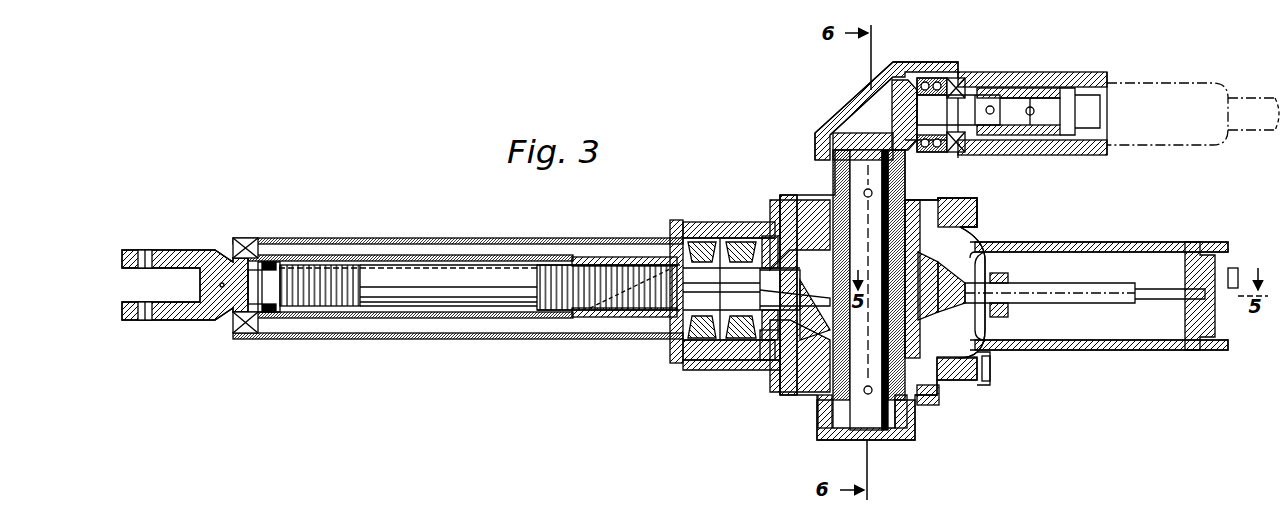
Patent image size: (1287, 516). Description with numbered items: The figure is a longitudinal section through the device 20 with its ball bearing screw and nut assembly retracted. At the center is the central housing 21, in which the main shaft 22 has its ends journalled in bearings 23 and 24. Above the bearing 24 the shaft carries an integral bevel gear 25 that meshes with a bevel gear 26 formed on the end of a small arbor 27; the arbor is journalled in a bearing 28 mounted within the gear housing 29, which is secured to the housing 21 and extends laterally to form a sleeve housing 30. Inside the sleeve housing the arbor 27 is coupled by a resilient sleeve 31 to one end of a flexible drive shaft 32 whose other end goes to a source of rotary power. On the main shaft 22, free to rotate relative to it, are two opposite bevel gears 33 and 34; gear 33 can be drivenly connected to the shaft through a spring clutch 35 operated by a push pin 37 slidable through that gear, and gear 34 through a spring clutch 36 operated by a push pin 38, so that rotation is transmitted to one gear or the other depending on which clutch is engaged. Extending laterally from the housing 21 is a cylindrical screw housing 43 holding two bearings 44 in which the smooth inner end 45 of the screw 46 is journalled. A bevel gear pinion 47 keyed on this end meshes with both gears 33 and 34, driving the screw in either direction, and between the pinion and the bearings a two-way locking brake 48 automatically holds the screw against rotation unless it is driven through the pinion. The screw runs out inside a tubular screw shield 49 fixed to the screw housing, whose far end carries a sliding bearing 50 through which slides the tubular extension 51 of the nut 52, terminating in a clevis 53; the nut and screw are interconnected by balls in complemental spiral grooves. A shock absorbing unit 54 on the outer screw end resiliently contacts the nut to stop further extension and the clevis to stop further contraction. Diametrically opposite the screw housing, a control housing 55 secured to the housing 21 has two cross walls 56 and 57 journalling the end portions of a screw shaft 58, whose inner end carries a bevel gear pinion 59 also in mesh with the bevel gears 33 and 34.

The device 20 is at (716, 365).
The central housing 21 is at (975, 208).
The main shaft 22 is at (932, 395).
The bearing 23 is at (828, 440).
The bearing 24 is at (835, 165).
The bevel gear 25 is at (855, 135).
The bevel gear 26 is at (895, 112).
The arbor 27 is at (950, 110).
The bearing 28 is at (942, 78).
The gear housing 29 is at (825, 132).
The sleeve housing 30 is at (1098, 72).
The resilient sleeve 31 is at (1040, 90).
The flexible drive shaft 32 is at (1215, 90).
The bevel gear 33 is at (945, 258).
The bevel gear 34 is at (958, 378).
The spring clutch 35 is at (836, 190).
The spring clutch 36 is at (830, 400).
The push pin 37 is at (768, 236).
The push pin 38 is at (826, 345).
The screw housing 43 is at (700, 222).
The bearings 44 is at (712, 240).
The smooth inner end 45 is at (748, 300).
The screw 46 is at (395, 290).
The bevel gear pinion 47 is at (788, 345).
The two-way locking brake 48 is at (758, 355).
The tubular screw shield 49 is at (322, 339).
The sliding bearing 50 is at (245, 240).
The tubular extension 51 is at (473, 318).
The nut 52 is at (595, 317).
The clevis 53 is at (183, 321).
The shock absorbing unit 54 is at (264, 313).
The control housing 55 is at (1085, 350).
The cross wall 56 is at (960, 310).
The cross wall 57 is at (1190, 350).
The screw shaft 58 is at (1085, 283).
The bevel gear pinion 59 is at (965, 288).